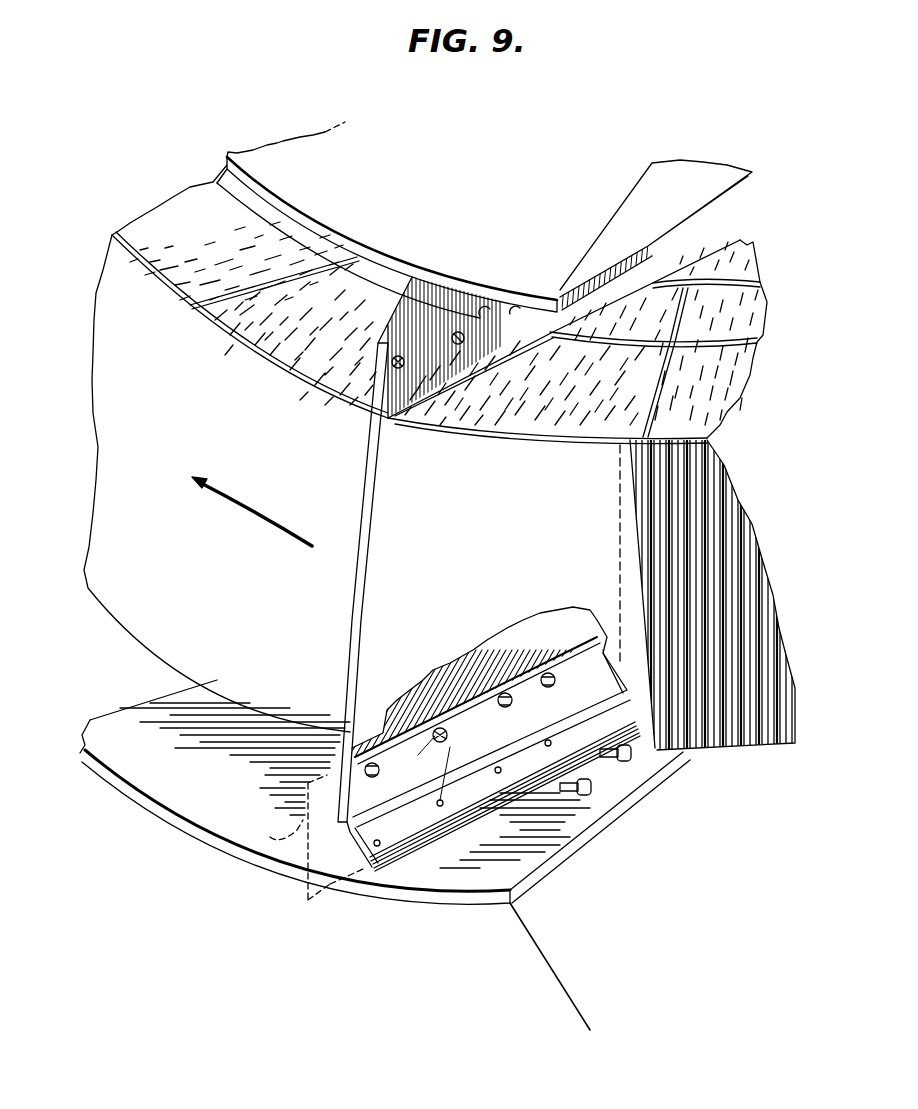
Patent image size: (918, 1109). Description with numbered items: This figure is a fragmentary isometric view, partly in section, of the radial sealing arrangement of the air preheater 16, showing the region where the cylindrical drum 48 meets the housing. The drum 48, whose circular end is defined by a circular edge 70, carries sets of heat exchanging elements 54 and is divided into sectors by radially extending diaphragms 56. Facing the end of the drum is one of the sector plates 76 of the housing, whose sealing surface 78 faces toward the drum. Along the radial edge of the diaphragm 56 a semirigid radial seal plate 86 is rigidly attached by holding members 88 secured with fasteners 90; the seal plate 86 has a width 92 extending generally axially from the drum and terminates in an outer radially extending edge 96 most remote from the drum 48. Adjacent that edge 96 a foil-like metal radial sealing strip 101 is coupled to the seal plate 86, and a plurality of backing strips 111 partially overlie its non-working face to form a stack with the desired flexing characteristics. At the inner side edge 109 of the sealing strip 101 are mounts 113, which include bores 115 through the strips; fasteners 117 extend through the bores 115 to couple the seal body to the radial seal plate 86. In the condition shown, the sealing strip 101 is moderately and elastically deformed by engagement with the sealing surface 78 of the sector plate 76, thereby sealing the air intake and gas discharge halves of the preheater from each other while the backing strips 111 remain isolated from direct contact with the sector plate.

The air preheater 16 is at (190, 868).
The cylindrical drum 48 is at (137, 254).
The heat exchanging elements 54 is at (640, 325).
The diaphragms 56 is at (360, 713).
The circular edge 70 is at (513, 452).
The sector plates 76 is at (490, 307).
The sealing surface 78 is at (562, 882).
The radial seal plates 86 is at (440, 320).
The holding members 88 is at (528, 684).
The fasteners 90 is at (402, 364).
The width 92 is at (290, 832).
The outer radially extending edge 96 is at (367, 870).
The radial sealing strip 101 is at (411, 268).
The inner side edge 109 is at (358, 836).
The backing strips 111 is at (488, 790).
The mounts 113 is at (570, 744).
The bores 115 is at (497, 768).
The fasteners 117 is at (632, 757).